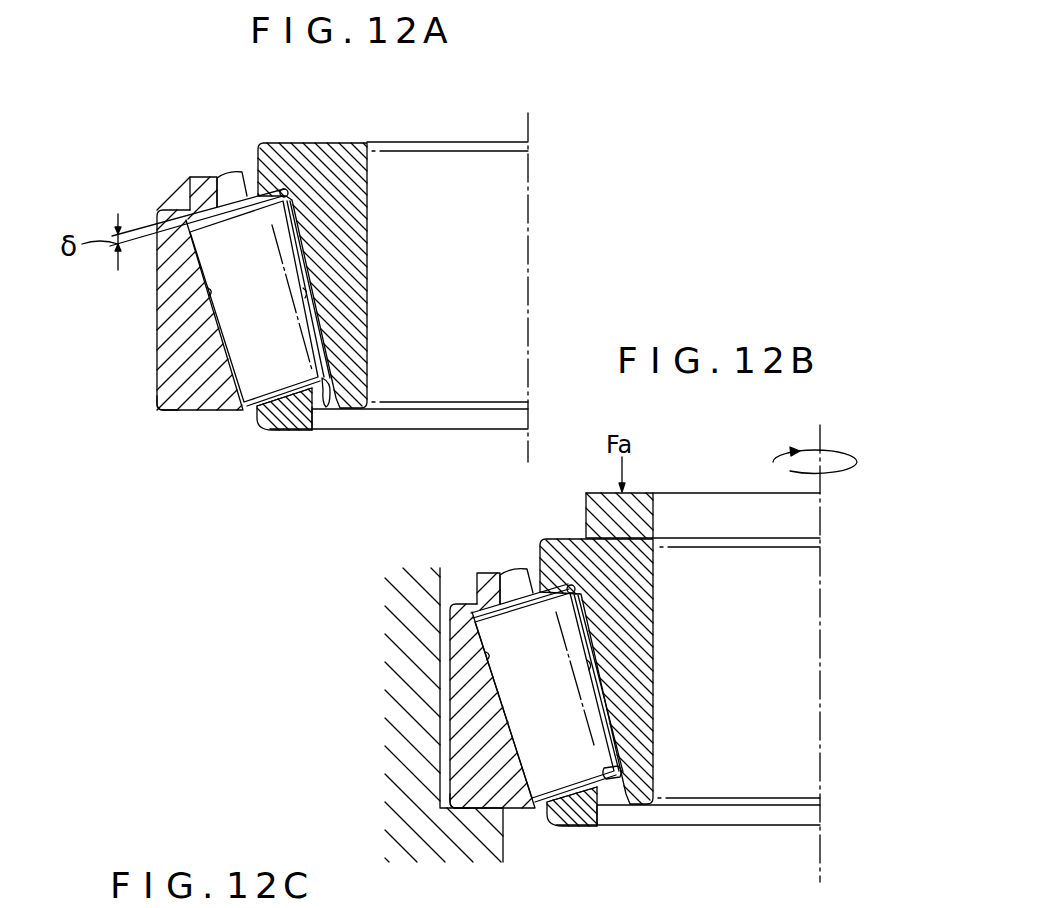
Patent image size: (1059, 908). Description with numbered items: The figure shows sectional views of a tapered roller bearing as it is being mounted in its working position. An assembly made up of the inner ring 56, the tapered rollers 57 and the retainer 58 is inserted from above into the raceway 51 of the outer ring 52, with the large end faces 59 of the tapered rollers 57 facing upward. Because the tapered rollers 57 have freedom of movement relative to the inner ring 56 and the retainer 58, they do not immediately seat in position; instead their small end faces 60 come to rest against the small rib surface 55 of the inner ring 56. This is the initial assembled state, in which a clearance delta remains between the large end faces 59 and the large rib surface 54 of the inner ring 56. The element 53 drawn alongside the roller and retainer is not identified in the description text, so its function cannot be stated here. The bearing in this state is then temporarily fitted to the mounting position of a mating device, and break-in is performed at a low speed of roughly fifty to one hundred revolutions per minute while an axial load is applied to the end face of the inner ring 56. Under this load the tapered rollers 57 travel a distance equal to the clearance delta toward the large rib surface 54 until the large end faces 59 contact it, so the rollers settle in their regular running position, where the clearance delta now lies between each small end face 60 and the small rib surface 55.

In FIG. 12A, the raceway 51 is at (207, 290).
In FIG. 12B, the raceway 51 is at (485, 655).
In FIG. 12A, the outer ring 52 is at (167, 350).
In FIG. 12B, the outer ring 52 is at (455, 707).
In FIG. 12A, the cage bar 53 is at (300, 297).
In FIG. 12B, the cage bar 53 is at (605, 648).
In FIG. 12A, the large rib surface 54 is at (247, 197).
In FIG. 12B, the large rib surface 54 is at (527, 597).
In FIG. 12A, the small rib surface 55 is at (331, 400).
In FIG. 12B, the small rib surface 55 is at (612, 780).
In FIG. 12A, the inner ring 56 is at (358, 345).
In FIG. 12B, the inner ring 56 is at (635, 740).
In FIG. 12A, the tapered roller 57 is at (163, 410).
In FIG. 12B, the tapered roller 57 is at (535, 757).
In FIG. 12A, the retainer 58 is at (272, 432).
In FIG. 12B, the retainer 58 is at (560, 826).
In FIG. 12A, the large end face 59 is at (217, 172).
In FIG. 12B, the large end face 59 is at (505, 568).
In FIG. 12A, the small end face 60 is at (298, 405).
In FIG. 12B, the small end face 60 is at (584, 800).